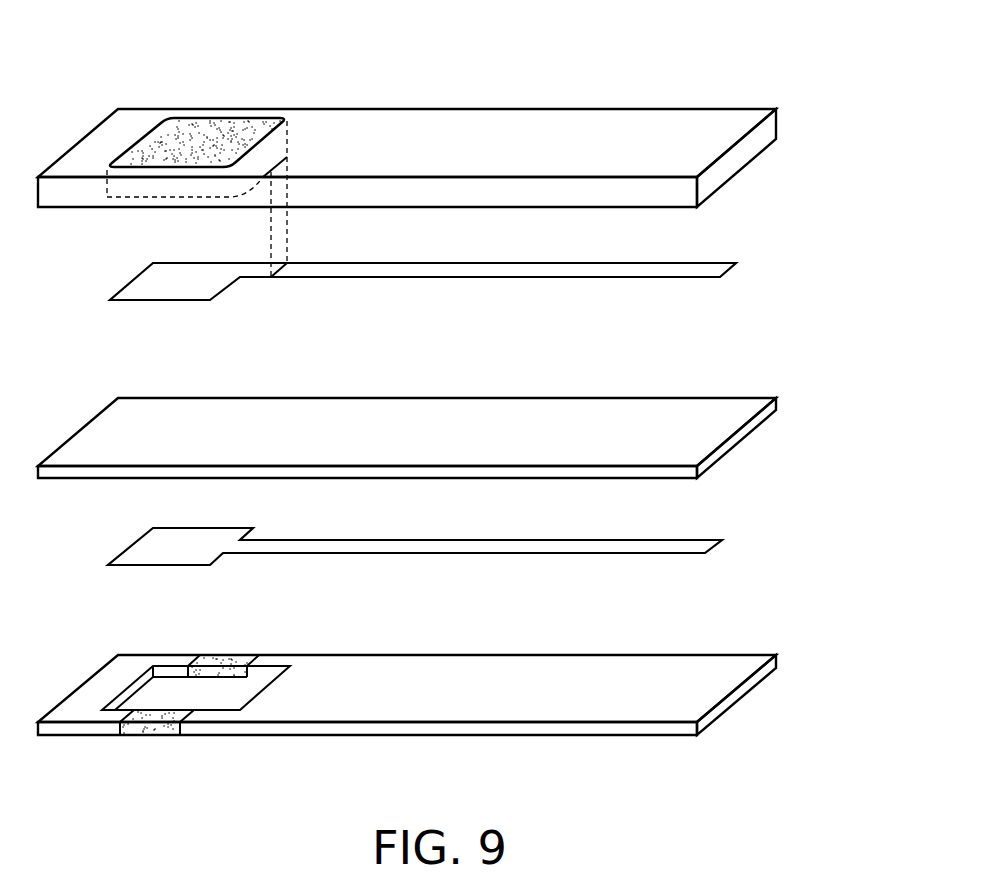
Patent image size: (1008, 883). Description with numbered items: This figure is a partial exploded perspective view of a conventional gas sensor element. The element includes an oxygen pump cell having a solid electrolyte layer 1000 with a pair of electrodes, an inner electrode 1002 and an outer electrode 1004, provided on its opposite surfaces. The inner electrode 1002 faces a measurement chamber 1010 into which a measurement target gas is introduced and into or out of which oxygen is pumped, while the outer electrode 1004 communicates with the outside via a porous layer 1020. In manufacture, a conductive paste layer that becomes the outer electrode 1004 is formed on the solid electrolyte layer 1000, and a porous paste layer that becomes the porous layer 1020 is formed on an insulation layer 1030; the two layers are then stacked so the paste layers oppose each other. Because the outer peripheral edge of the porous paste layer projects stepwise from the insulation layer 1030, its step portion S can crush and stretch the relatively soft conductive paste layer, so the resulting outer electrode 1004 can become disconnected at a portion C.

The insulation layer 1030 is at (762, 174).
The porous layer 1020 is at (188, 130).
The step portion S is at (287, 163).
The portion C is at (290, 291).
The outer electrode 1004 is at (187, 279).
The solid electrolyte layer 1000 is at (769, 442).
The inner electrode 1002 is at (180, 544).
The measurement chamber 1010 is at (235, 695).